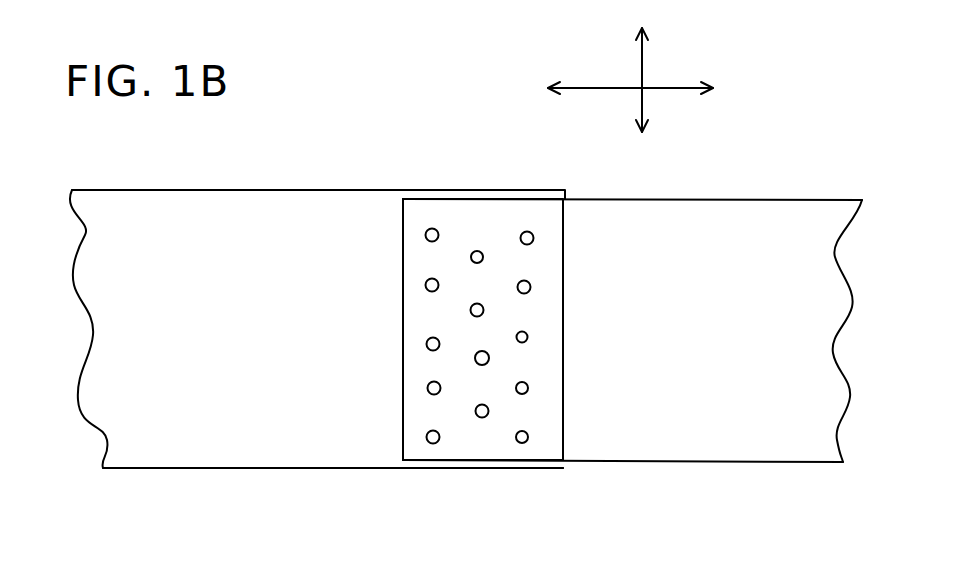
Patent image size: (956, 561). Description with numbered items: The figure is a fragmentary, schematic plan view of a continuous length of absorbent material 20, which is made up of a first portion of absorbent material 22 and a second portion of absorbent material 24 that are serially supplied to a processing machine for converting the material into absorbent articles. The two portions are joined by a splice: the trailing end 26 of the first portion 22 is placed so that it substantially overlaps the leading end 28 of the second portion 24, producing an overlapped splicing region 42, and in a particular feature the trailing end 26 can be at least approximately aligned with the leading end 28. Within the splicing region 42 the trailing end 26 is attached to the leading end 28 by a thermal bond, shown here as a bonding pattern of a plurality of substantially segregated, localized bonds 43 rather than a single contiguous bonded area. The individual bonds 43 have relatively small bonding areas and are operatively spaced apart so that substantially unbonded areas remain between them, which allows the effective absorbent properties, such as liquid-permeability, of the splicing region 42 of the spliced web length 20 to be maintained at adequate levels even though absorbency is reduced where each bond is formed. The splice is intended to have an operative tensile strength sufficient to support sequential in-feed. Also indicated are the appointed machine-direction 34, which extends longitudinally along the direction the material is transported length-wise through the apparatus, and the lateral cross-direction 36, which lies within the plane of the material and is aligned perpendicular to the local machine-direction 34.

The continuous length of absorbent material 20 is at (172, 502).
The first portion of absorbent material 22 is at (158, 182).
The second portion of absorbent material 24 is at (832, 192).
The trailing end 26 is at (518, 470).
The leading end 28 is at (420, 210).
The machine-direction 34 is at (695, 90).
The cross-direction 36 is at (642, 55).
The overlapped splicing region 42 is at (495, 222).
The localized bonds 43 is at (531, 286).